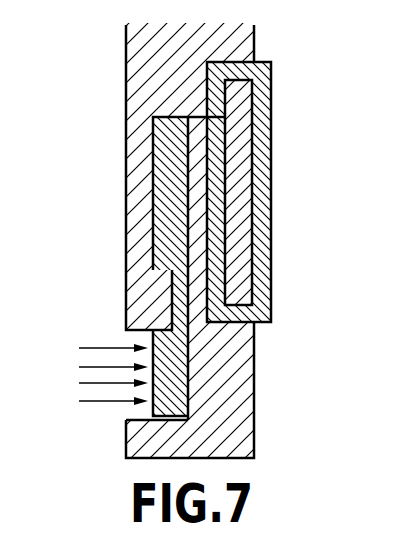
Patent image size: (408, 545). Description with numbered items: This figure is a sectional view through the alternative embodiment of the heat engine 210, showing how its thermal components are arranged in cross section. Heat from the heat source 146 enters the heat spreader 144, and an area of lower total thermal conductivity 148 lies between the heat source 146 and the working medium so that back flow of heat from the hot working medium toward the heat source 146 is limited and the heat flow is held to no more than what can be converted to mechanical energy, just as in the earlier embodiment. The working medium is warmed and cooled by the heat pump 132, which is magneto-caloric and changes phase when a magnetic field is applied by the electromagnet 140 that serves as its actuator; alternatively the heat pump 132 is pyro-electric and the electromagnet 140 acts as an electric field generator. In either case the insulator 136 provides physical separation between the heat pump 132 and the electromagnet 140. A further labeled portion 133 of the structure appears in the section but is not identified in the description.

The heat engine 210 is at (90, 66).
The wall portion 133 is at (197, 120).
The heat spreader 144 is at (172, 161).
The heat pump 132 is at (216, 150).
The electromagnet 140 is at (272, 189).
The insulator 136 is at (126, 218).
The area of lower total thermal conductivity 148 is at (172, 303).
The heat source 146 is at (108, 403).